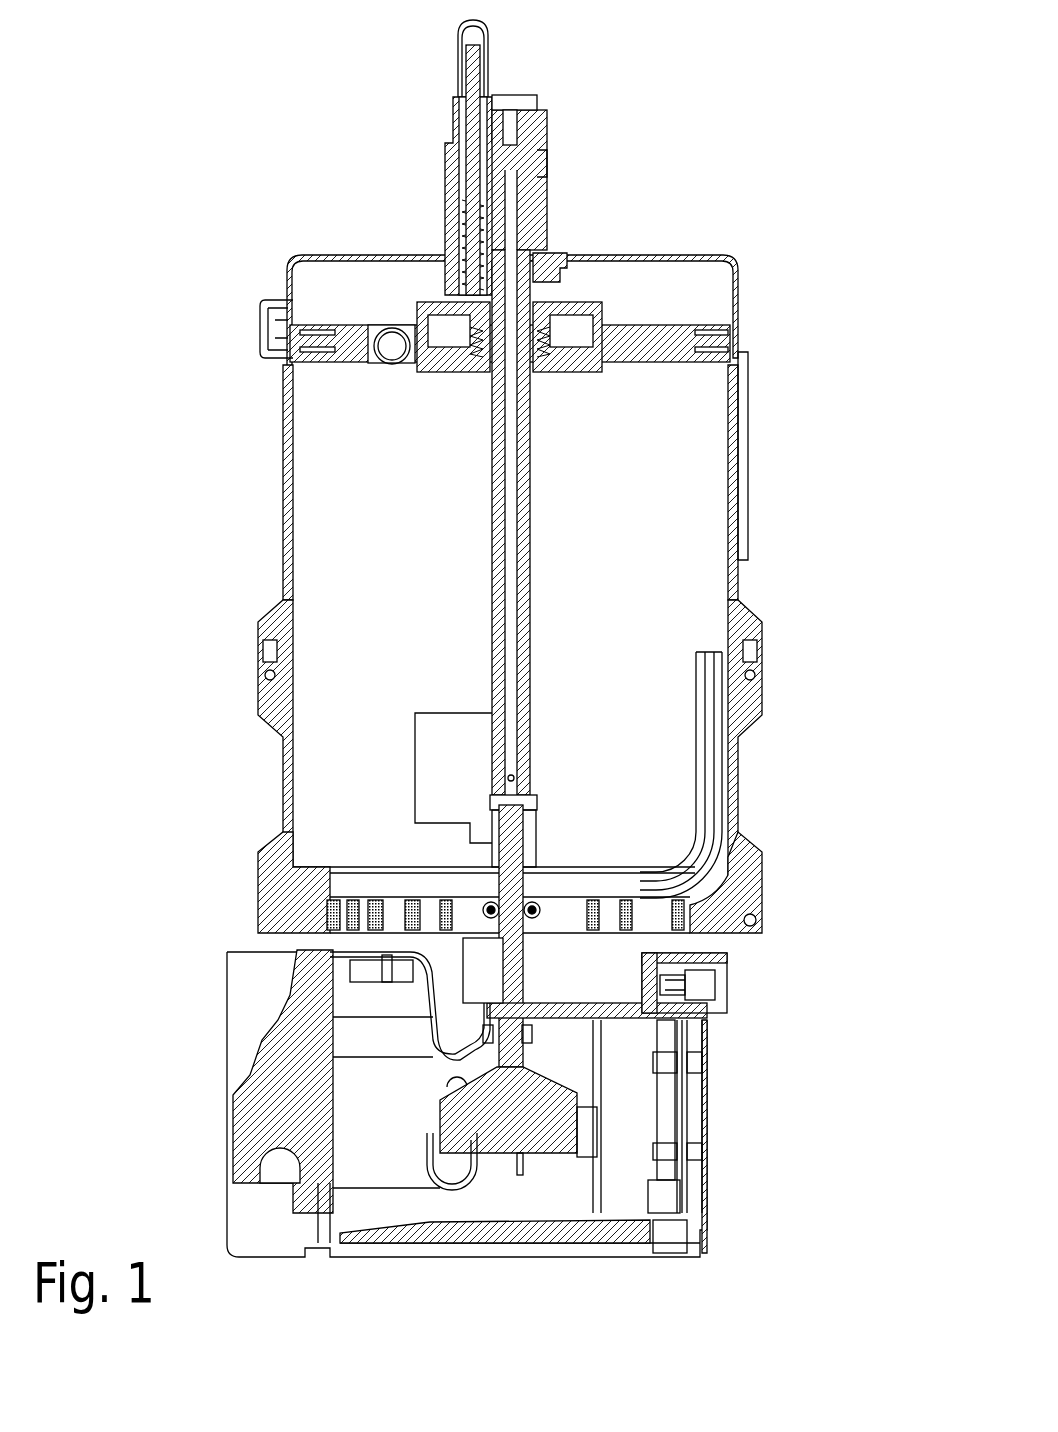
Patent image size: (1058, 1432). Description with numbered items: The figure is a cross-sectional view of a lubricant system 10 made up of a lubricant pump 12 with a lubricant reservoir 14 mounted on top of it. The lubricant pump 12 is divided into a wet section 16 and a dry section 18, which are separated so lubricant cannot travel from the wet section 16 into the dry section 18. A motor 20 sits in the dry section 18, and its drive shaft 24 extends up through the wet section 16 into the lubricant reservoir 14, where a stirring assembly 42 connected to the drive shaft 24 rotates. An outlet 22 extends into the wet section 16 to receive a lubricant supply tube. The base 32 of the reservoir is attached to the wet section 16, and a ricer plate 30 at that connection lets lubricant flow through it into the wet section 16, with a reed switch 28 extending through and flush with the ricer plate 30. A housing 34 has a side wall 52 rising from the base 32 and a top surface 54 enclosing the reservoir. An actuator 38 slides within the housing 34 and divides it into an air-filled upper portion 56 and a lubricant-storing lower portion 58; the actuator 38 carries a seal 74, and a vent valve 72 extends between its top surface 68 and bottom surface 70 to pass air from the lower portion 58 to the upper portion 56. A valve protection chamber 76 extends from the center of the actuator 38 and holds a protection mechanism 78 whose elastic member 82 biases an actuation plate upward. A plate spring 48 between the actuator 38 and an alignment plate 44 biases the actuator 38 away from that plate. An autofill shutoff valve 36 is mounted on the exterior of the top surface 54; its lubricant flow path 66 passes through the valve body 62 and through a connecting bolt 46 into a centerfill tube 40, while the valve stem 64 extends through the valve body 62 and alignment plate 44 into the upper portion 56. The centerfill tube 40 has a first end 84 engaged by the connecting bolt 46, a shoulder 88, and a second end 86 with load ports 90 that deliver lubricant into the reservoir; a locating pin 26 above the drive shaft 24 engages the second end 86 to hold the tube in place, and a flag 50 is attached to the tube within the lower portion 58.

The lubricant system 10 is at (143, 141).
The lubricant pump 12 is at (482, 1097).
The lubricant reservoir 14 is at (762, 482).
The wet section 16 is at (613, 977).
The dry section 18 is at (667, 1125).
The motor 20 is at (370, 1108).
The outlet 22 is at (728, 985).
The drive shaft 24 is at (512, 1077).
The locating pin 26 is at (500, 850).
The reed switch 28 is at (410, 905).
The ricer plate 30 is at (650, 907).
The base 32 is at (262, 905).
The housing 34 is at (745, 579).
The autofill shutoff valve 36 is at (537, 113).
The actuator 38 is at (510, 326).
The centerfill tube 40 is at (532, 524).
The stirring assembly 42 is at (697, 766).
The alignment plate 44 is at (548, 278).
The connecting bolt 46 is at (503, 140).
The plate spring 48 is at (572, 362).
The flag 50 is at (433, 780).
The side wall 52 is at (282, 457).
The top surface 54 is at (668, 250).
The upper portion 56 is at (686, 294).
The lower portion 58 is at (702, 430).
The valve body 62 is at (450, 175).
The valve stem 64 is at (462, 216).
The lubricant flow path 66 is at (490, 162).
The top surface 68 is at (345, 322).
The bottom surface 70 is at (333, 362).
The vent valve 72 is at (393, 330).
The seal 74 is at (290, 360).
The valve protection chamber 76 is at (457, 360).
The protection mechanism 78 is at (573, 301).
The elastic member 82 is at (545, 352).
The first end 84 is at (524, 241).
The second end 86 is at (532, 763).
The shoulder 88 is at (533, 262).
The load ports 90 is at (537, 809).